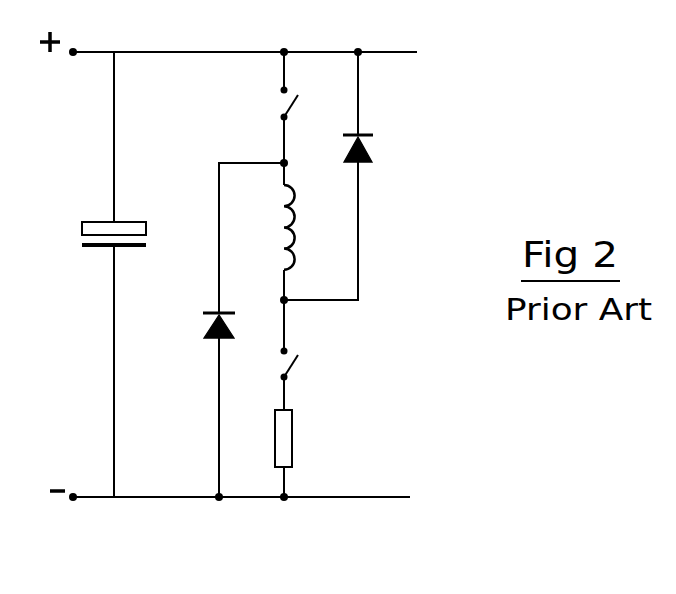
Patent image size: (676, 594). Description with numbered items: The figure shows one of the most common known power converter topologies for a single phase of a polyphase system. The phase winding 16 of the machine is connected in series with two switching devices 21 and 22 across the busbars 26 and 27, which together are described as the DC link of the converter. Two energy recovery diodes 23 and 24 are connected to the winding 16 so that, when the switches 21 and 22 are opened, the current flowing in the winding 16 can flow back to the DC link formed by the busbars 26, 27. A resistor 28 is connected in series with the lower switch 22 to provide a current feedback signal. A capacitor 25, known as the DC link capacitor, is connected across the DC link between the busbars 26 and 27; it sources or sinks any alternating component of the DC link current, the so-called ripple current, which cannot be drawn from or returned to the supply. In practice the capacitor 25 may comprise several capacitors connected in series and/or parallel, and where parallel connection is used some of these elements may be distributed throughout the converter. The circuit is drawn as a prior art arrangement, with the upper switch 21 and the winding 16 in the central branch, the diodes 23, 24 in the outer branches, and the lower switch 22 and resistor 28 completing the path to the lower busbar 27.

The phase winding 16 is at (302, 208).
The switching device 21 is at (280, 106).
The lower switch 22 is at (302, 367).
The energy recovery diode 23 is at (375, 145).
The energy recovery diode 24 is at (205, 319).
The DC link capacitor 25 is at (80, 237).
The busbar 26 is at (195, 52).
The busbar 27 is at (172, 497).
The resistor 28 is at (293, 437).